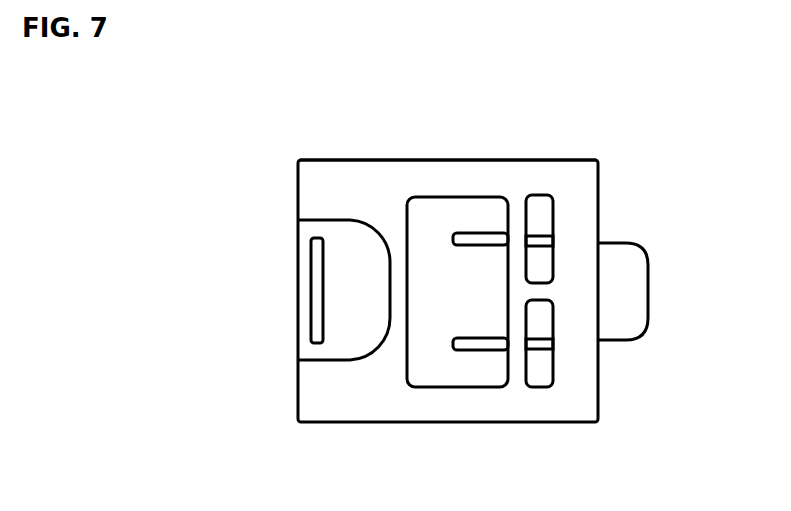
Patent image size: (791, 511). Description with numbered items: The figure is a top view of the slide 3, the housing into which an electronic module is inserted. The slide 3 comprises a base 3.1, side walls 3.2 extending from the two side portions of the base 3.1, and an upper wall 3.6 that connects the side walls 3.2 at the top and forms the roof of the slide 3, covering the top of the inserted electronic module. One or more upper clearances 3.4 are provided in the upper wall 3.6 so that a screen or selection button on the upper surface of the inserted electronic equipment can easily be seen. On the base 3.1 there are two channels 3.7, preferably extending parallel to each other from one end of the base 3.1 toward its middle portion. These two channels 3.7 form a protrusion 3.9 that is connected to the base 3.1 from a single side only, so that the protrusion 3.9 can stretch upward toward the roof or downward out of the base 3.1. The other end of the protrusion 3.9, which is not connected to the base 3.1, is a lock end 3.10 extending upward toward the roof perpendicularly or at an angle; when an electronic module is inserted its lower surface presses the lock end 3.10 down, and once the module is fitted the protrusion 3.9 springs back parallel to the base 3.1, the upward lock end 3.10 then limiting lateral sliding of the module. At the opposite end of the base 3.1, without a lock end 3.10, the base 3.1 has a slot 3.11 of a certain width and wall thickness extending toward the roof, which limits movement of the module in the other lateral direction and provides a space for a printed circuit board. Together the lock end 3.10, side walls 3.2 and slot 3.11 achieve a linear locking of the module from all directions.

The slide 3 is at (310, 121).
The base 3.1 is at (324, 232).
The slot 3.11 is at (310, 295).
The side wall 3.2 is at (538, 158).
The upper clearance 3.4 is at (542, 211).
The upper wall 3.6 is at (566, 192).
The channel 3.7 is at (483, 229).
The protrusion 3.9 is at (494, 304).
The lock end 3.10 is at (649, 297).